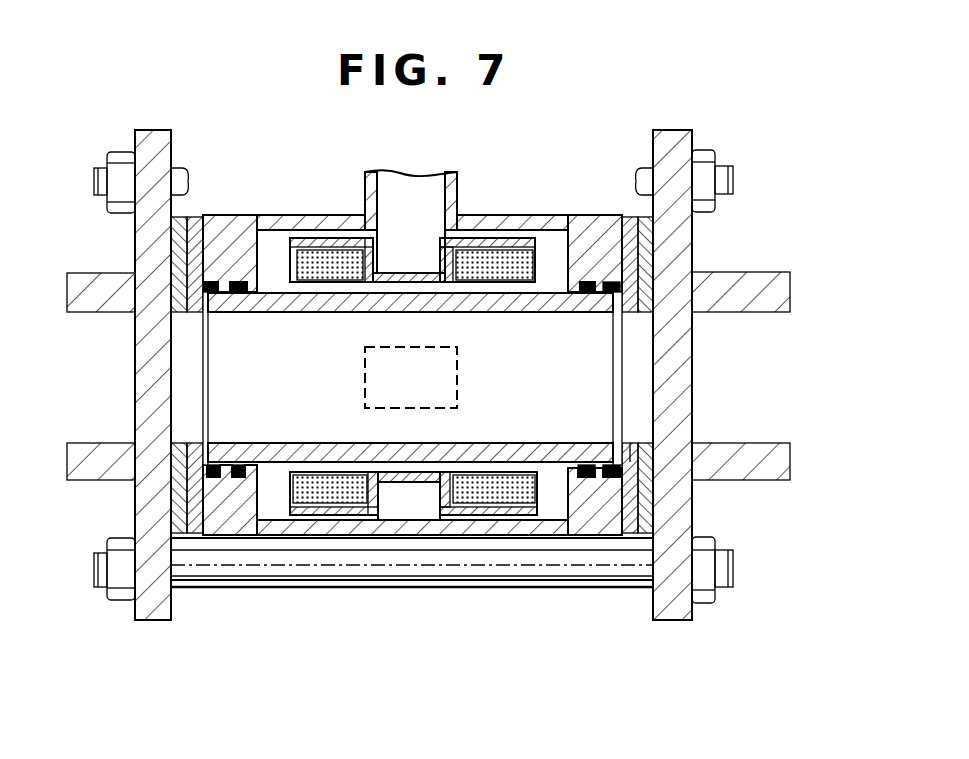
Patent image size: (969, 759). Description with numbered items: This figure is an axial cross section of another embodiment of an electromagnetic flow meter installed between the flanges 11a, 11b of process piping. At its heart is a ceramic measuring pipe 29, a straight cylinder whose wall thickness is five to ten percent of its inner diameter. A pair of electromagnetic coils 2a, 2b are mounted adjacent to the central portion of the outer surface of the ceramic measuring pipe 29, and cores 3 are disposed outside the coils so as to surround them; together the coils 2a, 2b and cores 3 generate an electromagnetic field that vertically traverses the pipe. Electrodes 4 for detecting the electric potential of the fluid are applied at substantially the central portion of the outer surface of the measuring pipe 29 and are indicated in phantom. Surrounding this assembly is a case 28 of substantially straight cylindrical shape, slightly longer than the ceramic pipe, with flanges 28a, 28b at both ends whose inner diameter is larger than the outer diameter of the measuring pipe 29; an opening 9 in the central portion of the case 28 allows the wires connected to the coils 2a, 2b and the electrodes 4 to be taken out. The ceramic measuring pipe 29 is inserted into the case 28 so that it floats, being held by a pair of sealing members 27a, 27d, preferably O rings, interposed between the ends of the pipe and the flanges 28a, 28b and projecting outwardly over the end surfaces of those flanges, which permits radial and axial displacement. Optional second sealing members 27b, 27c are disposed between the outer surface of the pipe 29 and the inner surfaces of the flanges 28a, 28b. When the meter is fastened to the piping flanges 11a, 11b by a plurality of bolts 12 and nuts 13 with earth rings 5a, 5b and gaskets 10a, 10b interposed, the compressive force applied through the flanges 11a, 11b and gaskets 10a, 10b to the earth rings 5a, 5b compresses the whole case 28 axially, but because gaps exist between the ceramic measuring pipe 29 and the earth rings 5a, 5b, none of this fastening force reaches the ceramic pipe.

The electromagnetic coil 2a is at (507, 250).
The electromagnetic coil 2b is at (493, 500).
The cores 3 is at (405, 482).
The electrodes 4 is at (513, 341).
The earth ring 5a is at (197, 217).
The earth ring 5b is at (627, 217).
The lead-out boss of housing 9 is at (425, 182).
The gasket 10a is at (177, 540).
The gasket 10b is at (643, 537).
The flange of the process piping 11a is at (158, 620).
The flange of the process piping 11b is at (667, 620).
The bolts 12 is at (298, 577).
The nuts 13 is at (120, 600).
The sealing member 27a is at (213, 462).
The second sealing member 27b is at (238, 453).
The second sealing member 27c is at (588, 462).
The sealing member 27d is at (637, 443).
The case 28 is at (333, 222).
The flange of the case 28a is at (210, 500).
The flange of the case 28b is at (610, 500).
The ceramic measuring pipe 29 is at (492, 443).